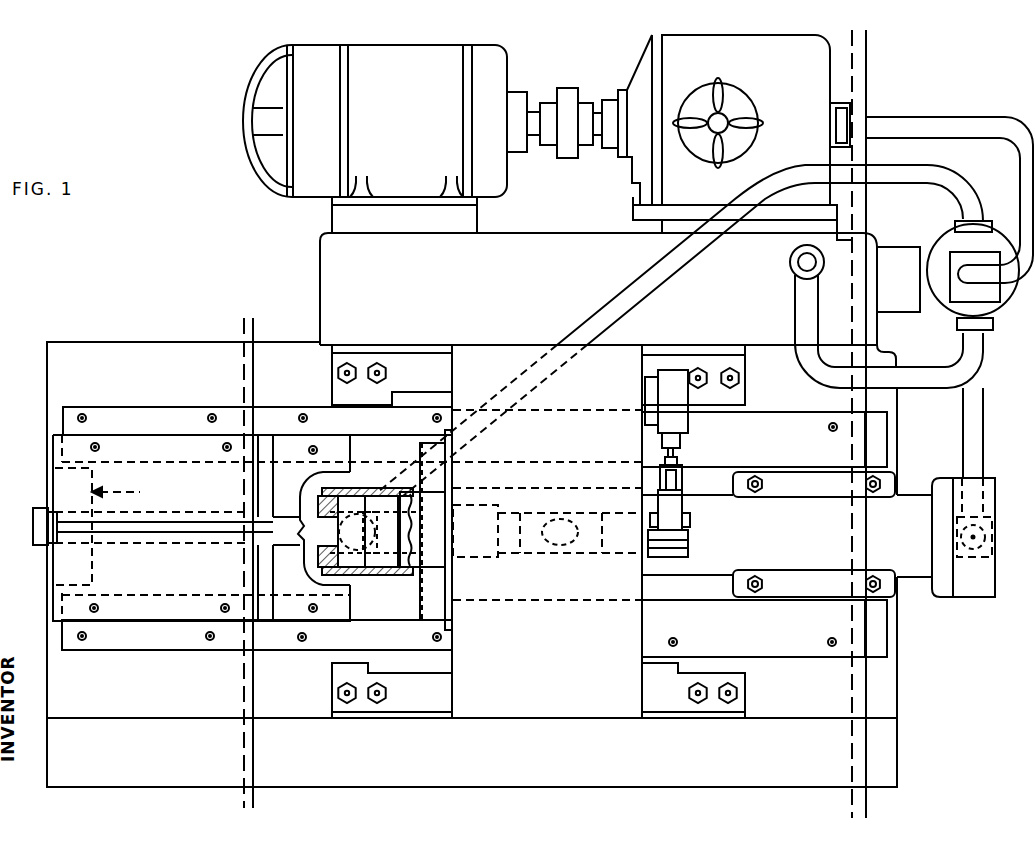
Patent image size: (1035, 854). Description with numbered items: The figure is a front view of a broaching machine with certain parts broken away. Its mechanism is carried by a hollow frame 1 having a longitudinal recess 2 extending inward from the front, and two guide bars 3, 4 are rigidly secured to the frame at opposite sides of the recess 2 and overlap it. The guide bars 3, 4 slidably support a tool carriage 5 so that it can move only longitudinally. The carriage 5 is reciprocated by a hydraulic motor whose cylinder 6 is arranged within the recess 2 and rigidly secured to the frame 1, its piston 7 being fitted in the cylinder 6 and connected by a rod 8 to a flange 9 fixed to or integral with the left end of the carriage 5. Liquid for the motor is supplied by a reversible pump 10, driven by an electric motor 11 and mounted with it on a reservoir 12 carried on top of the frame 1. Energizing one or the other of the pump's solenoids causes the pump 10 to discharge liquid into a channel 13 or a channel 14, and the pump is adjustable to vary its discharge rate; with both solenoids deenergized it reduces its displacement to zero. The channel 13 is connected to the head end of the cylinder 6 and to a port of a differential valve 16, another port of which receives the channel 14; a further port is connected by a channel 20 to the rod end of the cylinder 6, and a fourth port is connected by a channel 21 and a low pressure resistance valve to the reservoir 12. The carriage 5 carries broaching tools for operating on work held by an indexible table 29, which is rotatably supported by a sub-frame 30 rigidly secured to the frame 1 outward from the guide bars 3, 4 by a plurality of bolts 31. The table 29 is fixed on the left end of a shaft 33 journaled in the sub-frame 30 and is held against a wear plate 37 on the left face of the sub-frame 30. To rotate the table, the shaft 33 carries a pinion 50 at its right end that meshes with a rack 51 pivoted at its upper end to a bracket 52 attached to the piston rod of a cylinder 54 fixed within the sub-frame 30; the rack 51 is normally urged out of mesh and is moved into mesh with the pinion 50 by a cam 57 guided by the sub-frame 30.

The hollow frame 1 is at (152, 357).
The longitudinal recess 2 is at (366, 472).
The guide bar 3 is at (183, 420).
The guide bar 4 is at (170, 642).
The tool carriage 5 is at (347, 528).
The cylinder 6 is at (904, 513).
The piston 7 is at (375, 531).
The rod 8 is at (174, 526).
The flange 9 is at (103, 526).
The reversible pump 10 is at (739, 137).
The electric motor 11 is at (435, 139).
The reservoir 12 is at (620, 300).
The channel 13 is at (968, 161).
The channel 14 is at (984, 130).
The differential valve 16 is at (997, 310).
The channel 20 is at (678, 269).
The channel 21 is at (927, 378).
The indexible table 29 is at (440, 602).
The sub-frame 30 is at (528, 708).
The bolts 31 is at (340, 374).
The shaft 33 is at (560, 532).
The wear plate 37 is at (446, 620).
The pinion 50 is at (690, 521).
The rack 51 is at (670, 510).
The bracket 52 is at (683, 470).
The cylinder 54 is at (666, 417).
The cam 57 is at (690, 538).